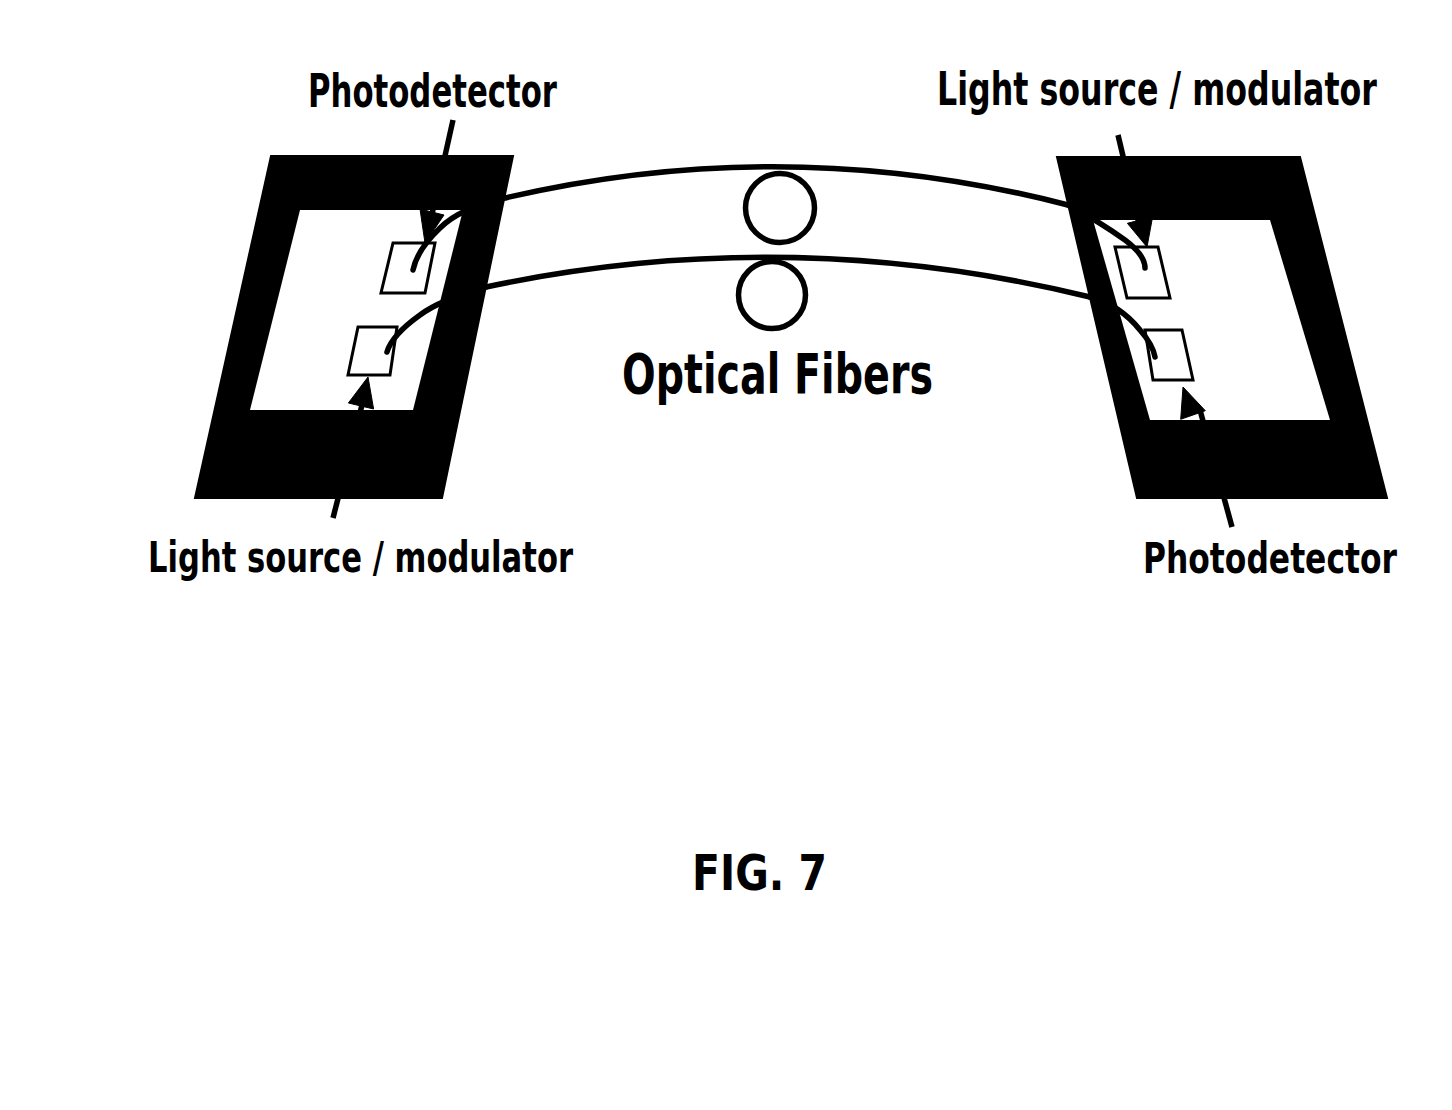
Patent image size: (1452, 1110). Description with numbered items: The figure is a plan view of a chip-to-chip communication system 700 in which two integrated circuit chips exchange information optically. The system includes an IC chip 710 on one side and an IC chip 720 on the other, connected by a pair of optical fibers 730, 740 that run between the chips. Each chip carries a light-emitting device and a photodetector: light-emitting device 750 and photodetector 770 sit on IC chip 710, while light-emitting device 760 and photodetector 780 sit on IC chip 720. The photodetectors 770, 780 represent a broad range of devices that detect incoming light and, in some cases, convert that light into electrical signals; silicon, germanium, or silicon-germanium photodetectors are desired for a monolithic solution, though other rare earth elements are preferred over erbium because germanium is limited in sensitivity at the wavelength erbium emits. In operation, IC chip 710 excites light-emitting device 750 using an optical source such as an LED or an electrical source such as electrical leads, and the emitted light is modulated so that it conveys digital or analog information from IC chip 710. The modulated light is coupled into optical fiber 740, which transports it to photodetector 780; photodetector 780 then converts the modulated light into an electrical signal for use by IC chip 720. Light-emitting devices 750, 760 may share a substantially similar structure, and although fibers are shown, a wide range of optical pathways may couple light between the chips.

The chip-to-chip communication system 700 is at (413, 649).
The IC chip 710 is at (233, 305).
The IC chip 720 is at (1335, 295).
The optical fiber 730 is at (687, 167).
The optical fiber 740 is at (1000, 278).
The light-emitting device 750 is at (395, 360).
The light-emitting device 760 is at (1128, 272).
The photodetector 770 is at (430, 255).
The photodetector 780 is at (1150, 380).